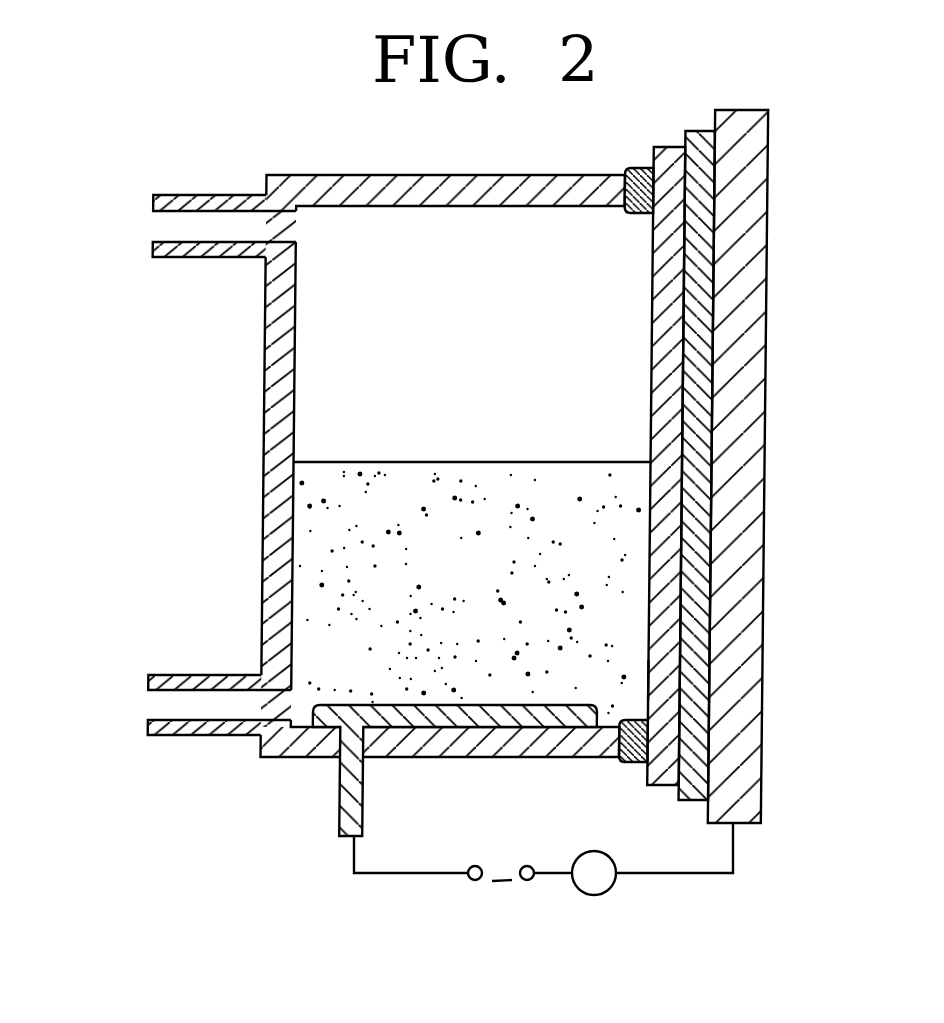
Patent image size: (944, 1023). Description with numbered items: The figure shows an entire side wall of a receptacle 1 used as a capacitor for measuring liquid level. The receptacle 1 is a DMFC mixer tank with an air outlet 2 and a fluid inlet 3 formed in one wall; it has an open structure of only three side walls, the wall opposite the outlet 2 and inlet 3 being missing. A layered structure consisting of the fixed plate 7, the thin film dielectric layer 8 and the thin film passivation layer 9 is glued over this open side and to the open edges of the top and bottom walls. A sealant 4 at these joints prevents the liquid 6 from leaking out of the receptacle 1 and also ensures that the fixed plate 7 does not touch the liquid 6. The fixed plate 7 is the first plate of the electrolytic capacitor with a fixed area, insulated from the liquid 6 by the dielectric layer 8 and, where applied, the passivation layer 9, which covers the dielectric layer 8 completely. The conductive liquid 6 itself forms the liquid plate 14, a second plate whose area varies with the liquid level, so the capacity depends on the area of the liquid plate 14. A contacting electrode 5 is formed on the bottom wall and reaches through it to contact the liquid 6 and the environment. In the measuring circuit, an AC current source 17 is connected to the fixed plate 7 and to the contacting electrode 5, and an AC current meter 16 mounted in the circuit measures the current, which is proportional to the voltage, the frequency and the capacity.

The receptacle 1 is at (290, 192).
The air outlet 2 is at (170, 228).
The fluid inlet 3 is at (162, 705).
The sealant 4 is at (641, 168).
The contacting electrode 5 is at (340, 797).
The liquid 6 is at (317, 498).
The fixed plate 7 is at (740, 435).
The thin film dielectric layer 8 is at (693, 370).
The thin film passivation layer 9 is at (667, 308).
The liquid plate 14 is at (623, 683).
The AC current meter 16 is at (603, 895).
The AC current source 17 is at (472, 888).